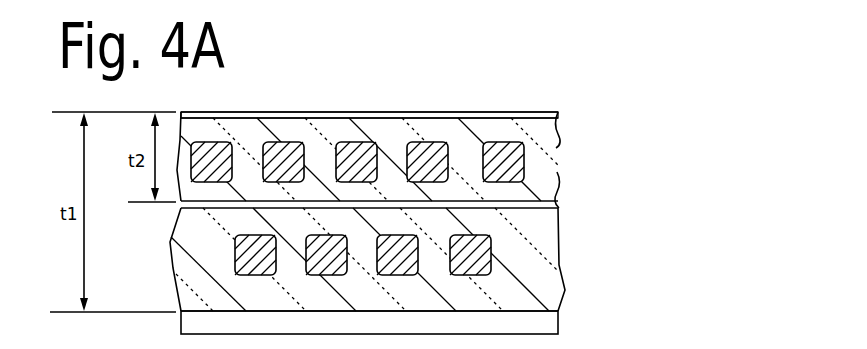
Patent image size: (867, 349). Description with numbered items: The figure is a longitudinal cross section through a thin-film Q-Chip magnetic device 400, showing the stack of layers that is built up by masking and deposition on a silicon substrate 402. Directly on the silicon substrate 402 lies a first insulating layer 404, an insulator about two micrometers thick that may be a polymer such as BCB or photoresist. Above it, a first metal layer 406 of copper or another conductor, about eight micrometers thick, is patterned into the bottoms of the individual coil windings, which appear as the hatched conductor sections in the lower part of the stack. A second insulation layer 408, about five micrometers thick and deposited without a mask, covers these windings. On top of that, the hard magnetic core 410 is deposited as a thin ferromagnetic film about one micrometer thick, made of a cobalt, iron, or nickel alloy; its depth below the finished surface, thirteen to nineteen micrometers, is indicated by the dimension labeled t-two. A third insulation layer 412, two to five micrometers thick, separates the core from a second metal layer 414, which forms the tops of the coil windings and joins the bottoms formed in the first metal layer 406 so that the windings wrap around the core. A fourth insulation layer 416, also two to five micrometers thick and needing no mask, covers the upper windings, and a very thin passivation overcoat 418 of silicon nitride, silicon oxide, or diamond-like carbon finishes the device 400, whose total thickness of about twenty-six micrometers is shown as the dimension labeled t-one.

The thin-film Q-Chip magnetic device 400 is at (474, 64).
The silicon substrate 402 is at (567, 322).
The first layer (ins-1) 404 is at (572, 292).
The first metal layer (met-1) 406 is at (570, 254).
The second insulation layer (ins-2) 408 is at (567, 227).
The hard magnetic core (mag-1) 410 is at (556, 204).
The third insulation layer (ins-3) 412 is at (554, 183).
The second metal layer (met-2) 414 is at (550, 162).
The fourth insulation layer (ins-4) 416 is at (548, 135).
The passivation overcoat (psvn-1) 418 is at (557, 113).